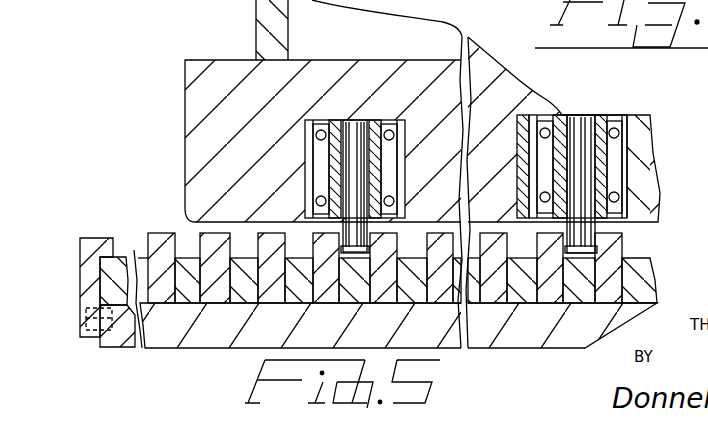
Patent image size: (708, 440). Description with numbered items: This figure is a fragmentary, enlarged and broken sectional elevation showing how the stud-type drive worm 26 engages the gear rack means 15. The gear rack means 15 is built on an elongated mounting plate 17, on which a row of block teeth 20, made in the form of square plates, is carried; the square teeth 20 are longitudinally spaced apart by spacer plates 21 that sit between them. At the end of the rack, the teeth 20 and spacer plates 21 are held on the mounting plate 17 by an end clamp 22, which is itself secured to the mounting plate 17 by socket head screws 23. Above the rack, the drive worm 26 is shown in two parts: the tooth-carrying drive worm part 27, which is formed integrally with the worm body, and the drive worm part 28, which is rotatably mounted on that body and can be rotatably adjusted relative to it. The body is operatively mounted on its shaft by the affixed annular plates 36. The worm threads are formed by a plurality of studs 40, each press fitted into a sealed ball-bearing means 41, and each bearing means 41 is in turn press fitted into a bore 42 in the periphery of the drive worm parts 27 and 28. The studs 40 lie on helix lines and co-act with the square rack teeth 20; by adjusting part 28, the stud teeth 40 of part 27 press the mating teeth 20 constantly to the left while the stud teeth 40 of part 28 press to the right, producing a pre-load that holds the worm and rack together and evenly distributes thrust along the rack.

The gear rack means 15 is at (190, 350).
The mounting plate 17 is at (507, 340).
The block teeth 20 is at (200, 232).
The spacer plates 21 is at (238, 303).
The end clamp 22 is at (105, 250).
The socket head screws 23 is at (85, 330).
The drive worm 26 is at (203, 58).
The drive worm part 27 is at (207, 88).
The drive worm part 28 is at (641, 120).
The annular plates 36 is at (277, 25).
The studs 40 is at (360, 133).
The sealed ball-bearing means 41 is at (388, 134).
The bore 42 is at (399, 150).